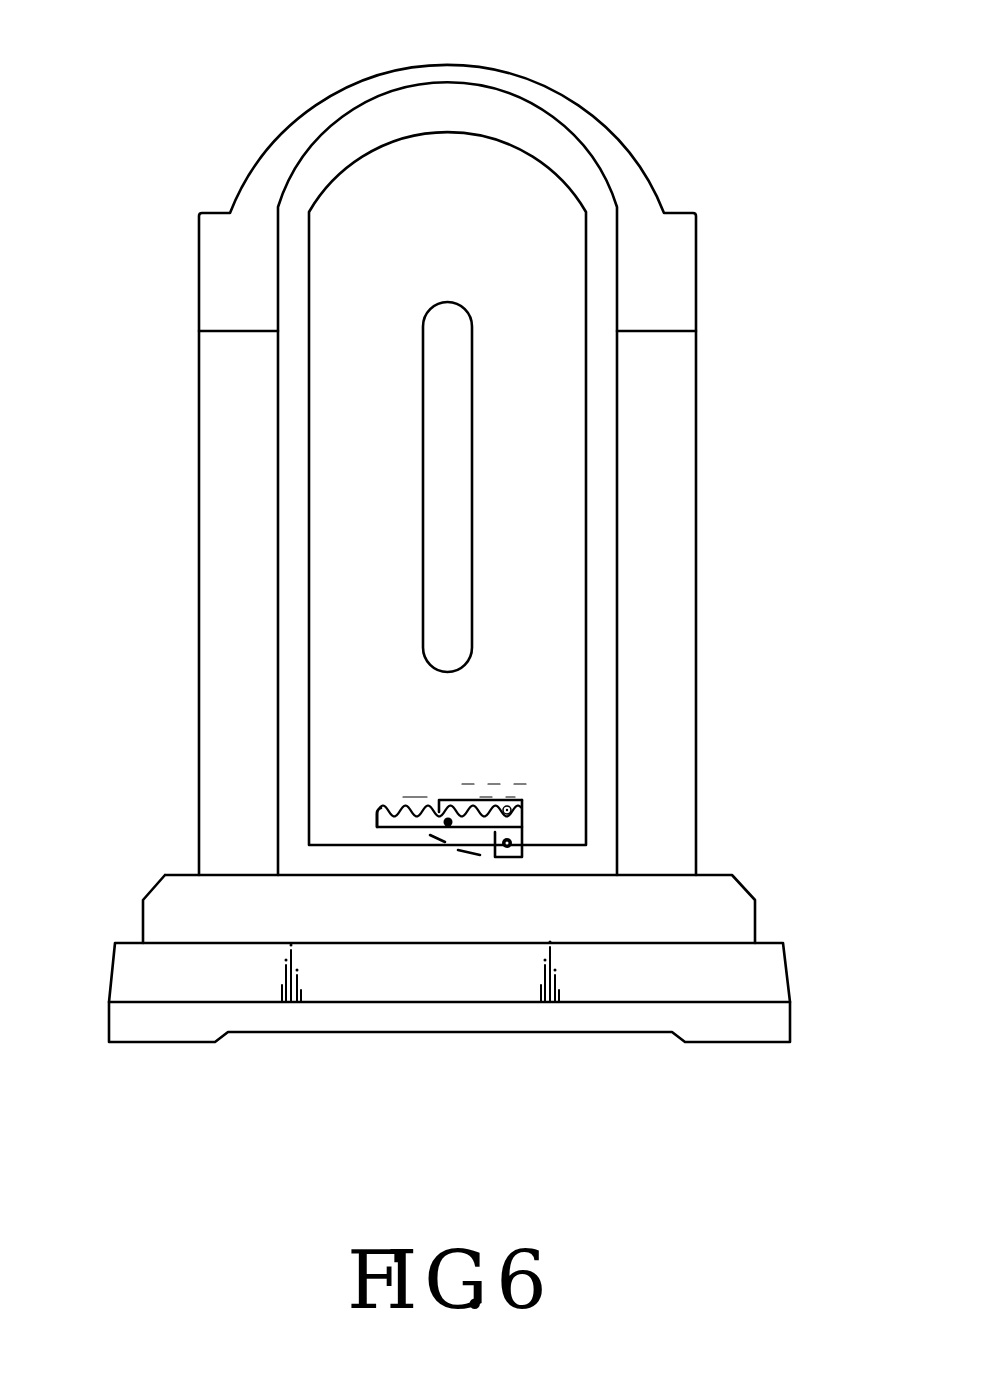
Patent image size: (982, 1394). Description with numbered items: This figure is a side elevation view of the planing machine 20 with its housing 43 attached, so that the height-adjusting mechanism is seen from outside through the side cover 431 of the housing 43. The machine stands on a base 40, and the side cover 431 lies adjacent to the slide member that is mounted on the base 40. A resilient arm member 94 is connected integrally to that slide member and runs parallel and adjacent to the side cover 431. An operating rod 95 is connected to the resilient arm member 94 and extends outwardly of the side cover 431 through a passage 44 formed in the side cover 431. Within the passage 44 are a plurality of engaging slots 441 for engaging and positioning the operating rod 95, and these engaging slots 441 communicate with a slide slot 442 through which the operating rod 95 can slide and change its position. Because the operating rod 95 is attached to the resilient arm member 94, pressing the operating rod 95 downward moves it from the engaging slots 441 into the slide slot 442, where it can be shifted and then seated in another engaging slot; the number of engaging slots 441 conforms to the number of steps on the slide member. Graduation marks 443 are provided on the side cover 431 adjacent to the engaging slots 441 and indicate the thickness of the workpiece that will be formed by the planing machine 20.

The planing machine 20 is at (258, 130).
The housing 43 is at (702, 377).
The side cover 431 is at (523, 180).
The base 40 is at (790, 955).
The passage 44 is at (375, 808).
The engaging slots 441 is at (432, 805).
The slide slot 442 is at (383, 826).
The graduation marks 443 is at (365, 775).
The resilient arm member 94 is at (507, 850).
The operating rod 95 is at (448, 826).